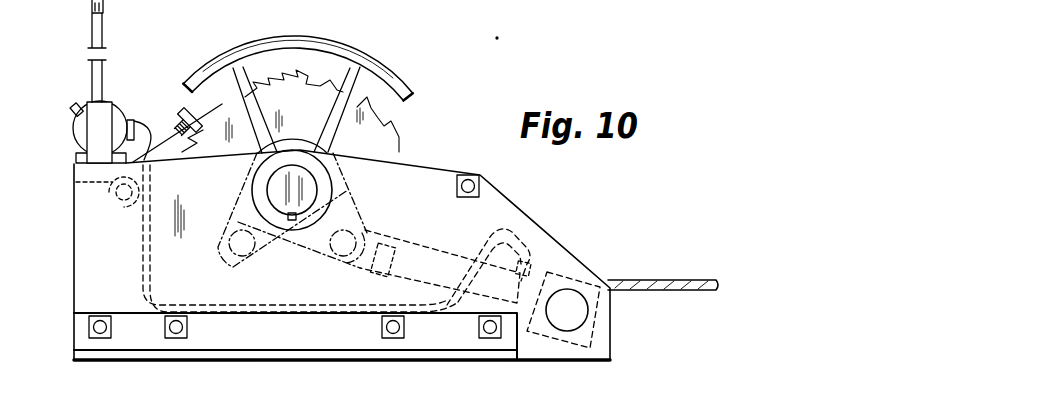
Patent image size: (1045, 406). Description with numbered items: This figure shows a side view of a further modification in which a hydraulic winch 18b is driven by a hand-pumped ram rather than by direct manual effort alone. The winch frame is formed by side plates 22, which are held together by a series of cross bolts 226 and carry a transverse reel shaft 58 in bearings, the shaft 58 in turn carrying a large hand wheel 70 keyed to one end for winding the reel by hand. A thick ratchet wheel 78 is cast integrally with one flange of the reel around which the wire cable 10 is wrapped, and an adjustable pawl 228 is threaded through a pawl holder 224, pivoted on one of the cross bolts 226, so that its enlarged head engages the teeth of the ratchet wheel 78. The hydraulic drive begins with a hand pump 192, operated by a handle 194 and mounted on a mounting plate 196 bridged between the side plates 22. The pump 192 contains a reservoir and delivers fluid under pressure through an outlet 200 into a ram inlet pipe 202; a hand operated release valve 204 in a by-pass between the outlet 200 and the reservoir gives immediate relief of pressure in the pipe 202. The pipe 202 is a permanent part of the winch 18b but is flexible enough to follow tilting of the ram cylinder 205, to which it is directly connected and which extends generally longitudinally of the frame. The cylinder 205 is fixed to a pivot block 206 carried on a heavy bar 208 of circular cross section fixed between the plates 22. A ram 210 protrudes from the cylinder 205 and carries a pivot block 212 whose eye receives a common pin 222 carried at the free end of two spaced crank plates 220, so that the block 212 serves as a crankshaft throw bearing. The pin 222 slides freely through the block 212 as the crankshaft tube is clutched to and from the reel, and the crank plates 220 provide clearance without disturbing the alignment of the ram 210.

The wire cable 10 is at (655, 280).
The hydraulic winch 18b is at (582, 358).
The frame side plates 22 is at (73, 248).
The shaft 58 is at (296, 178).
The hand wheel 70 is at (408, 92).
The ratchet wheel 78 is at (293, 88).
The hand pump 192 is at (72, 128).
The handle 194 is at (93, 22).
The mounting plate 196 is at (75, 157).
The outlet 200 is at (126, 134).
The ram inlet pipe 202 is at (146, 274).
The hand operated release valve 204 is at (73, 110).
The ram cylinder 205 is at (433, 247).
The pivot block 206 is at (585, 282).
The heavy bar 208 is at (590, 312).
The ram 210 is at (397, 242).
The pivot block 212 is at (385, 246).
The crank plates 220 is at (398, 145).
The pin 222 is at (321, 264).
The pawl holder 224 is at (77, 182).
The cross bolts 226 is at (121, 208).
The adjustable pawl 228 is at (184, 108).